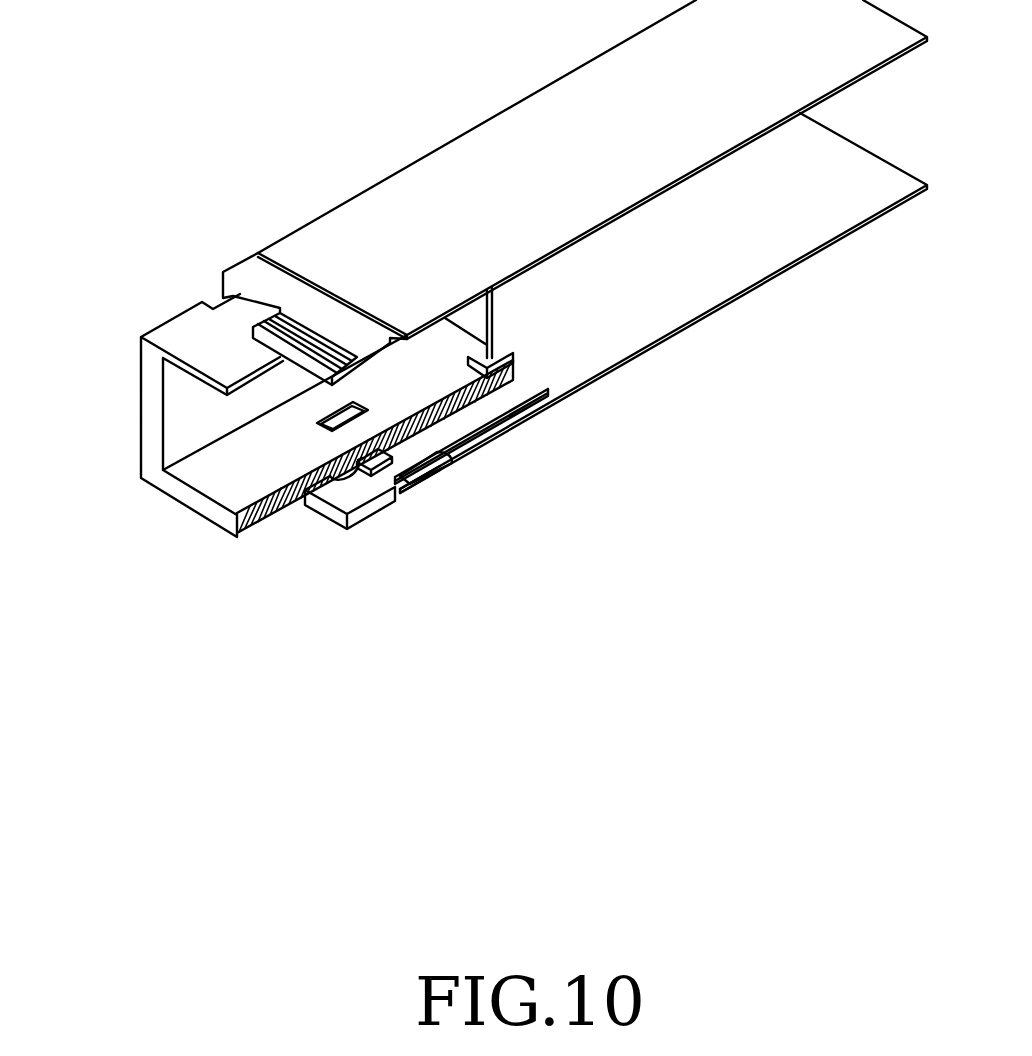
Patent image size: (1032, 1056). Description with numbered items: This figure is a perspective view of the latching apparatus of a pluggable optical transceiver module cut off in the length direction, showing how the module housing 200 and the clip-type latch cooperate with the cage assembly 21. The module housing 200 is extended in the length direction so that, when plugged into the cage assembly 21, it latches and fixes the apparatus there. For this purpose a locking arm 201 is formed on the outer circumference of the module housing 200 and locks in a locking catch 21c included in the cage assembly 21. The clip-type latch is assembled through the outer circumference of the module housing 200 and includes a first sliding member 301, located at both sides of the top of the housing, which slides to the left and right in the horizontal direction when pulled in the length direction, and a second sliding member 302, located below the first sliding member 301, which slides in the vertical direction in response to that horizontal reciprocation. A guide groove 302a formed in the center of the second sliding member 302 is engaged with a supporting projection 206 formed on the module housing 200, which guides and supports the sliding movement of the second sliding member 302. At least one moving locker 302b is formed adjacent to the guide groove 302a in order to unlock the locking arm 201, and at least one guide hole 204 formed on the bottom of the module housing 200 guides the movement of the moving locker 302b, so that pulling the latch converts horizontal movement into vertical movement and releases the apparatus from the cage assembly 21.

The cage assembly 21 is at (515, 98).
The locking catch 21c is at (525, 422).
The module housing 200 is at (138, 403).
The locking arm 201 is at (427, 477).
The guide hole 204 is at (317, 423).
The supporting projection 206 is at (320, 490).
The first sliding member 301 is at (246, 268).
The second sliding member 302 is at (362, 503).
The guide groove 302a is at (356, 497).
The moving locker 302b is at (410, 487).